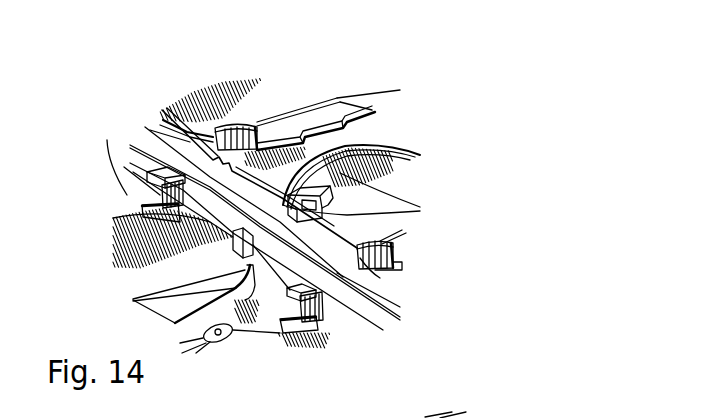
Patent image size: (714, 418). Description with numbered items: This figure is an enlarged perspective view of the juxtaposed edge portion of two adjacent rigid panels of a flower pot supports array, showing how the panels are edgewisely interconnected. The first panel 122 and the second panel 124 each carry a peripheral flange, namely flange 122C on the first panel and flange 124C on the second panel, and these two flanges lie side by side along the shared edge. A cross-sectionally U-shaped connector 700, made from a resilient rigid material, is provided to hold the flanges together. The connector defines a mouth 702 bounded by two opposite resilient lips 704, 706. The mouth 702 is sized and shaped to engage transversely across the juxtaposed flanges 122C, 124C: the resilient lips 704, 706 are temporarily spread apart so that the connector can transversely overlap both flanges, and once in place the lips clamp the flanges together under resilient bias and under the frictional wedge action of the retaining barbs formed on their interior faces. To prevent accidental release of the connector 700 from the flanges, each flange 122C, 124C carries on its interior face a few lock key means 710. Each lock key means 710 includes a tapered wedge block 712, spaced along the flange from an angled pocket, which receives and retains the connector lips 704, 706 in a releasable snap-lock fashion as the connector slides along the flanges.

The panel 122 is at (107, 140).
The peripheral flange 122C is at (134, 168).
The panel 124 is at (262, 107).
The peripheral flange 124C is at (293, 140).
The U-shape connector 700 is at (420, 155).
The resilient lip 706 is at (420, 211).
The mouth 702 is at (347, 220).
The resilient lip 704 is at (380, 278).
The tapered wedge block 712 is at (347, 273).
The lock key means 710 is at (262, 283).